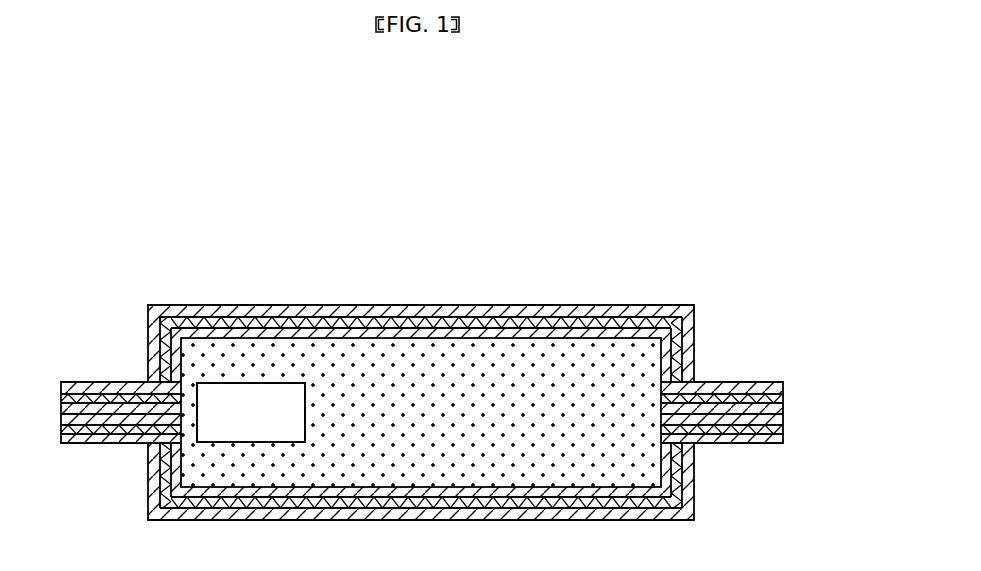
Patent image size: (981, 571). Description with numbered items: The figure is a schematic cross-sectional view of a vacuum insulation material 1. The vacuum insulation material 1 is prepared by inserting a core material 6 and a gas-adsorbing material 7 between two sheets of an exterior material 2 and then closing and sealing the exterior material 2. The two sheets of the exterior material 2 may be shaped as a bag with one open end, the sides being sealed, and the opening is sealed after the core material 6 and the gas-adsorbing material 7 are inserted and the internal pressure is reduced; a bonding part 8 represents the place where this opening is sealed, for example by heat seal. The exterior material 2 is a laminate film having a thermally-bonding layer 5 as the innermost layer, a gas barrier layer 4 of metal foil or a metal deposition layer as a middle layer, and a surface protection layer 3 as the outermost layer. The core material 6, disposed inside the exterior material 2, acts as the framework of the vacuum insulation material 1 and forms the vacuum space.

The vacuum insulation material 1 is at (690, 220).
The exterior material 2 is at (473, 214).
The surface protection layer 3 is at (583, 312).
The gas barrier layer 4 is at (526, 322).
The thermally-bonding layer 5 is at (474, 332).
The core material 6 is at (363, 362).
The gas-adsorbing material 7 is at (255, 395).
The bonding part 8 is at (745, 382).